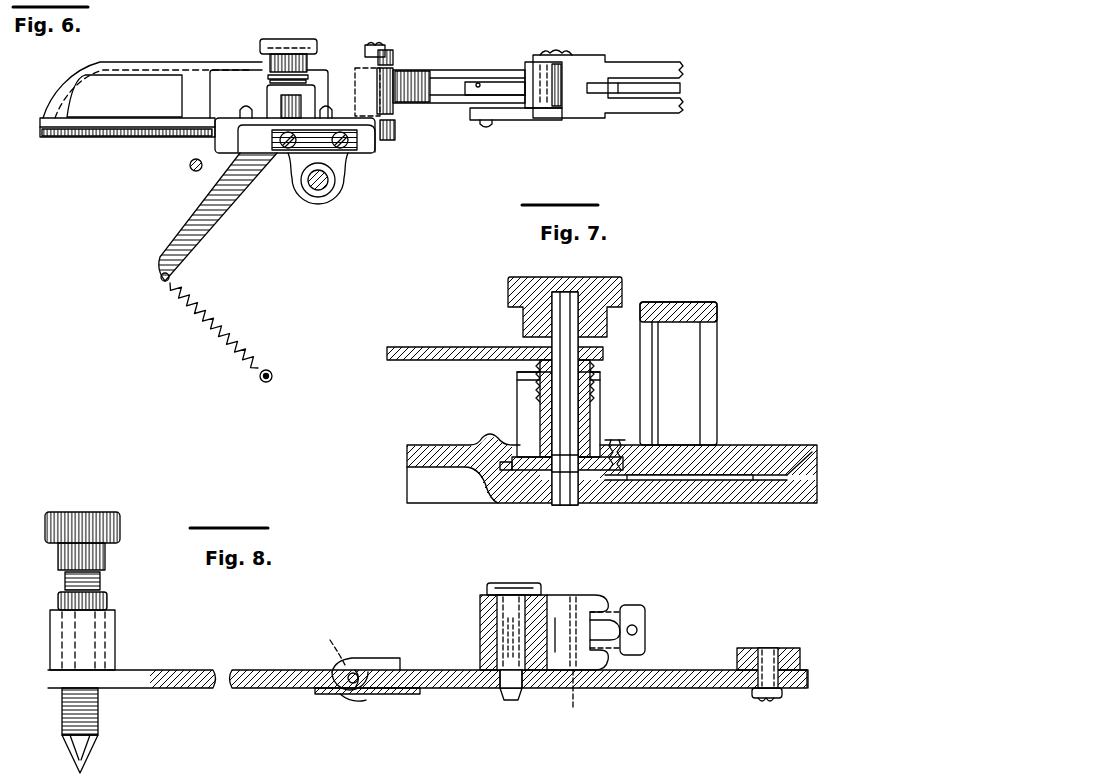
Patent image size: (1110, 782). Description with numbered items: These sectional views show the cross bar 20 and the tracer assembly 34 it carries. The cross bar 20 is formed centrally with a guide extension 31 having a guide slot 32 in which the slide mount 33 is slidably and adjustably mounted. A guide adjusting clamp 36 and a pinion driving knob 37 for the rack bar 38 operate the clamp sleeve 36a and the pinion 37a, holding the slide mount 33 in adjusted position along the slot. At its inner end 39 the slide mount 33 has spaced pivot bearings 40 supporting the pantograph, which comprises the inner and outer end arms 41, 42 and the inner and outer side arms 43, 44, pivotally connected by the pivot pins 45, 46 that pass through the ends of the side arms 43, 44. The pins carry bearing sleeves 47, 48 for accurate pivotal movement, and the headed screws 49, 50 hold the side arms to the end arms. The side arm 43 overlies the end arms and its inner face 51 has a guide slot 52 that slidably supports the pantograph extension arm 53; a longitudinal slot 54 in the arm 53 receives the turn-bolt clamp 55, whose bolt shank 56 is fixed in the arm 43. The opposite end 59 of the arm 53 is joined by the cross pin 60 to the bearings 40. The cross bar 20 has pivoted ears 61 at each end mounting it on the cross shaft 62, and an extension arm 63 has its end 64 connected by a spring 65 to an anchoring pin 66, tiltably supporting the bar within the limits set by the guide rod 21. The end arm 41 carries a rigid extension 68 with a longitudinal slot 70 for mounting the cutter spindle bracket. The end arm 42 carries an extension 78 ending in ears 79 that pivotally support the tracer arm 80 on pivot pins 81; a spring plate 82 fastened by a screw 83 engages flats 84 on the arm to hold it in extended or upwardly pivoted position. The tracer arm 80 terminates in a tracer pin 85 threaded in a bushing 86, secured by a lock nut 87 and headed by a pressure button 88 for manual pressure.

In FIG. 6, the cross bar 20 is at (370, 146).
In FIG. 7, the cross bar 20 is at (428, 456).
In FIG. 6, the guide rod 21 is at (188, 164).
In FIG. 6, the guide extension 31 is at (226, 148).
In FIG. 7, the guide extension 31 is at (765, 492).
In FIG. 7, the guide slot 32 is at (792, 450).
In FIG. 6, the slide mount 33 is at (55, 120).
In FIG. 7, the slide mount 33 is at (718, 456).
In FIG. 6, the tracer assembly 34 is at (662, 62).
In FIG. 6, the guide adjusting clamp 36 is at (272, 77).
In FIG. 7, the guide adjusting clamp 36 is at (420, 346).
In FIG. 6, the clamp sleeve 36a is at (285, 104).
In FIG. 7, the clamp sleeve 36a is at (530, 432).
In FIG. 6, the pinion driving knob 37 is at (272, 42).
In FIG. 7, the pinion driving knob 37 is at (535, 290).
In FIG. 7, the pinion 37a is at (524, 464).
In FIG. 6, the rack bar 38 is at (78, 135).
In FIG. 7, the rack bar 38 is at (625, 452).
In FIG. 6, the inner end of slide mount 39 is at (338, 68).
In FIG. 7, the inner end of slide mount 39 is at (688, 306).
In FIG. 6, the pivot bearings 40 is at (393, 56).
In FIG. 6, the inner end arm 41 is at (520, 115).
In FIG. 8, the outer end arm 42 is at (666, 690).
In FIG. 6, the inner side arm 43 is at (548, 108).
In FIG. 8, the inner side arm 43 is at (484, 632).
In FIG. 8, the outer side arm 44 is at (784, 656).
In FIG. 8, the pivot pin 45 is at (509, 700).
In FIG. 8, the pivot pin 46 is at (768, 650).
In FIG. 8, the bearing sleeve 47 is at (496, 610).
In FIG. 8, the bearing sleeve 48 is at (786, 690).
In FIG. 6, the headed screw 49 is at (548, 52).
In FIG. 8, the headed screw 49 is at (500, 582).
In FIG. 6, the headed screw 50 is at (486, 122).
In FIG. 8, the headed screw 50 is at (762, 700).
In FIG. 8, the inner face 51 is at (532, 640).
In FIG. 8, the guide slot 52 is at (556, 680).
In FIG. 6, the pantograph extension arm 53 is at (425, 72).
In FIG. 8, the pantograph extension arm 53 is at (598, 598).
In FIG. 6, the longitudinal slot 54 is at (478, 82).
In FIG. 8, the longitudinal slot 54 is at (587, 701).
In FIG. 8, the turn-bolt clamp 55 is at (634, 614).
In FIG. 8, the bolt shank 56 is at (576, 600).
In FIG. 6, the opposite end of extension arm 59 is at (378, 92).
In FIG. 6, the cross pin 60 is at (375, 44).
In FIG. 6, the pivoted ears 61 is at (335, 162).
In FIG. 6, the cross shaft 62 is at (324, 187).
In FIG. 6, the extension arm 63 is at (237, 190).
In FIG. 6, the end of extension arm 64 is at (160, 276).
In FIG. 6, the spring 65 is at (222, 322).
In FIG. 6, the anchoring pin 66 is at (272, 372).
In FIG. 6, the extension 68 is at (580, 60).
In FIG. 6, the longitudinal slot 70 is at (672, 95).
In FIG. 8, the extension 78 is at (448, 690).
In FIG. 8, the ears 79 is at (358, 660).
In FIG. 8, the tracer arm 80 is at (232, 688).
In FIG. 8, the pivot pins 81 is at (328, 639).
In FIG. 8, the spring plate 82 is at (350, 700).
In FIG. 8, the screw 83 is at (392, 695).
In FIG. 8, the flats 84 is at (342, 674).
In FIG. 8, the tracer pin 85 is at (66, 752).
In FIG. 8, the bushing 86 is at (52, 628).
In FIG. 8, the lock nut 87 is at (58, 600).
In FIG. 8, the pressure button 88 is at (55, 520).